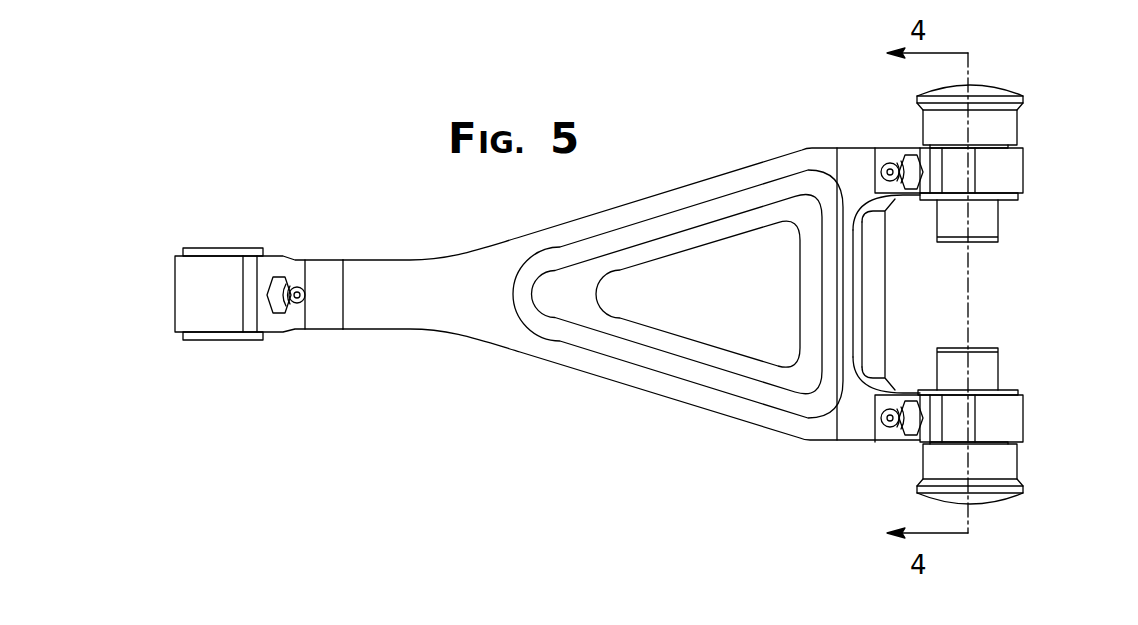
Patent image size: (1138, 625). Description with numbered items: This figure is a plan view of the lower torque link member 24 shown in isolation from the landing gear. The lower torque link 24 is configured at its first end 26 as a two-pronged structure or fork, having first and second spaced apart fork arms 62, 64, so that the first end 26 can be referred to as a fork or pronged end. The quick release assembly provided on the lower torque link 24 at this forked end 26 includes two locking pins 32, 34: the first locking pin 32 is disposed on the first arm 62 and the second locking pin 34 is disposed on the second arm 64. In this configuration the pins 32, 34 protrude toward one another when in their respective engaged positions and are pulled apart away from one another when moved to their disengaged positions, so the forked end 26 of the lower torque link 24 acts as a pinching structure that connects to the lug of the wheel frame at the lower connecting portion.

The lower torque link member 24 is at (632, 405).
The first end 26 is at (877, 287).
The first locking pin 32 is at (990, 120).
The second locking pin 34 is at (995, 465).
The first fork arm 62 is at (1012, 176).
The second fork arm 64 is at (1012, 411).